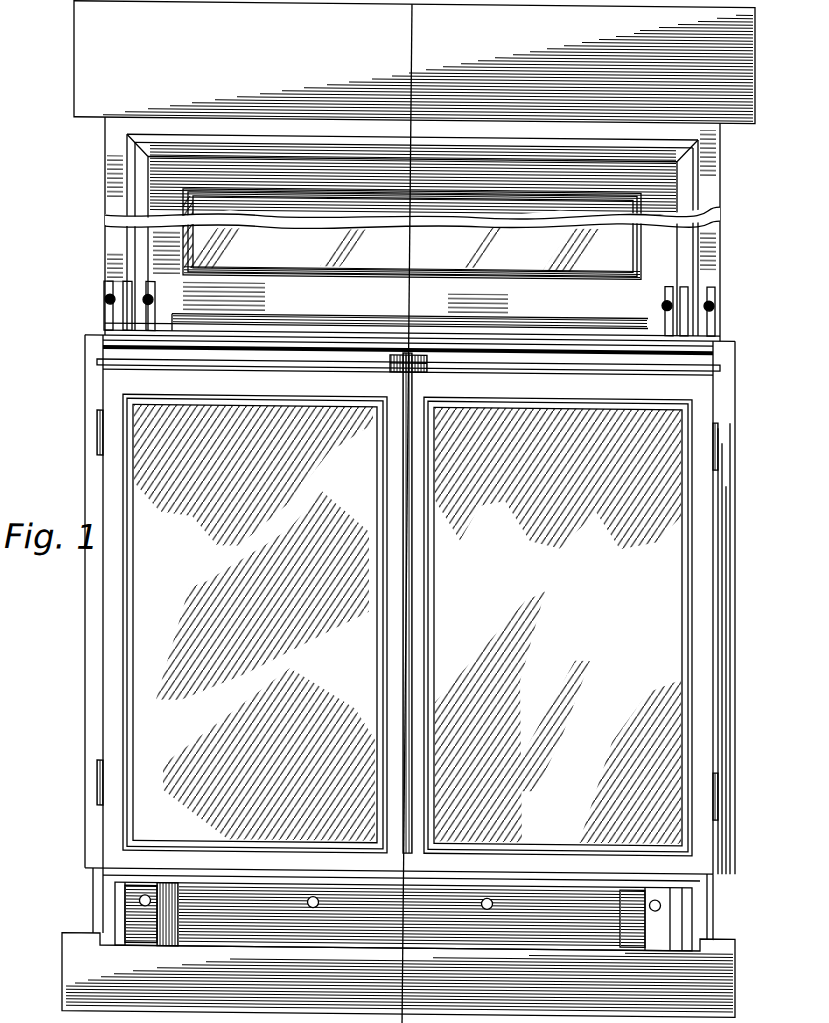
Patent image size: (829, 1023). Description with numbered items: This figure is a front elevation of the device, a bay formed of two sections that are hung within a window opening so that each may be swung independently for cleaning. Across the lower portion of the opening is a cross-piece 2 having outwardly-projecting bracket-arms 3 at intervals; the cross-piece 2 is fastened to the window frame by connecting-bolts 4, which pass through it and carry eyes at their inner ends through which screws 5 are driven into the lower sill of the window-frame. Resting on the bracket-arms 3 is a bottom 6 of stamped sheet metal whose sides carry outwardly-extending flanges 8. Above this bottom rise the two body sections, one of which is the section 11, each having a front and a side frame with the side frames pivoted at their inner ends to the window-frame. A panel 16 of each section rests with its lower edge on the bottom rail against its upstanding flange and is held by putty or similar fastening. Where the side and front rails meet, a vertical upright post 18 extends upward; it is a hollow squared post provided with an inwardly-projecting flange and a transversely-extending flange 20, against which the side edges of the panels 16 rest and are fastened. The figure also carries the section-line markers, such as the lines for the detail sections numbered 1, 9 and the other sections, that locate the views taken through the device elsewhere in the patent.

The fastening bolt of lower rail 1 is at (487, 909).
The cross-piece 2 is at (452, 13).
The bracket-arms 3 is at (160, 922).
The connecting-bolts 4 is at (750, 779).
The screws 5 is at (250, 884).
The bottom 6 is at (217, 830).
The flanges 8 is at (125, 413).
The section line 9- 9 is at (357, 578).
The section 11 is at (556, 474).
The panel 16 is at (140, 670).
The vertical upright post 18 is at (110, 600).
The transversely-extending flange 20 is at (230, 475).